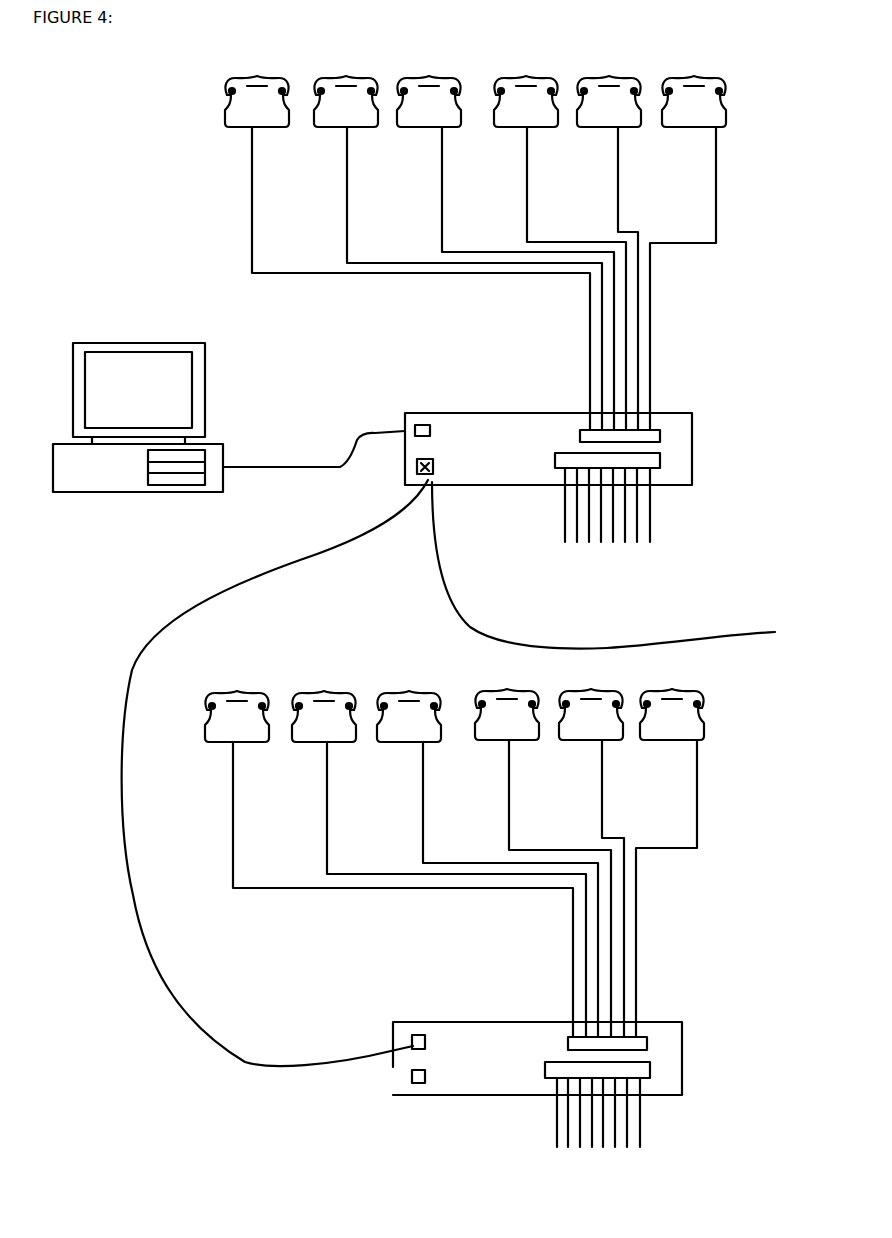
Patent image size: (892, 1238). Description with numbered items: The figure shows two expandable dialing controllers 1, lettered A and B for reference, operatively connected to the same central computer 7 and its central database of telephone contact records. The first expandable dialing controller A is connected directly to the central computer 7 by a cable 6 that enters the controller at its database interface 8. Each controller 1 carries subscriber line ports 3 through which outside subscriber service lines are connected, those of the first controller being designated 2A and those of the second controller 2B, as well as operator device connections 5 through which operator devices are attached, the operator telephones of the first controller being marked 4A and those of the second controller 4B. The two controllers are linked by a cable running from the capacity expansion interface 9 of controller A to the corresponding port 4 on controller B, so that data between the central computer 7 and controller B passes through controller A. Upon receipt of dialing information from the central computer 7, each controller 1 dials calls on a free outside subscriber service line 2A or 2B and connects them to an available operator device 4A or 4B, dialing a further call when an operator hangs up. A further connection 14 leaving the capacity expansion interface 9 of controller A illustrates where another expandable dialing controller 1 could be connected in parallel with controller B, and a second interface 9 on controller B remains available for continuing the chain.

The expandable dialing controller 1 is at (455, 488).
The outside subscriber service lines of first controller 2A is at (656, 545).
The outside subscriber service lines of second controller 2B is at (647, 1150).
The subscriber line port 3 is at (555, 462).
The operator device 4 is at (416, 1033).
The operator devices of first controller 4A is at (728, 115).
The operator devices of second controller 4B is at (706, 720).
The operator device connection 5 is at (580, 436).
The computer cable 6 is at (327, 468).
The central computer 7 is at (130, 493).
The database interface 8 is at (422, 425).
The capacity expansion interface 9 is at (433, 478).
The connection 14 is at (765, 622).
The first expandable dialing controller A is at (715, 460).
The second expandable dialing controller B is at (699, 1058).